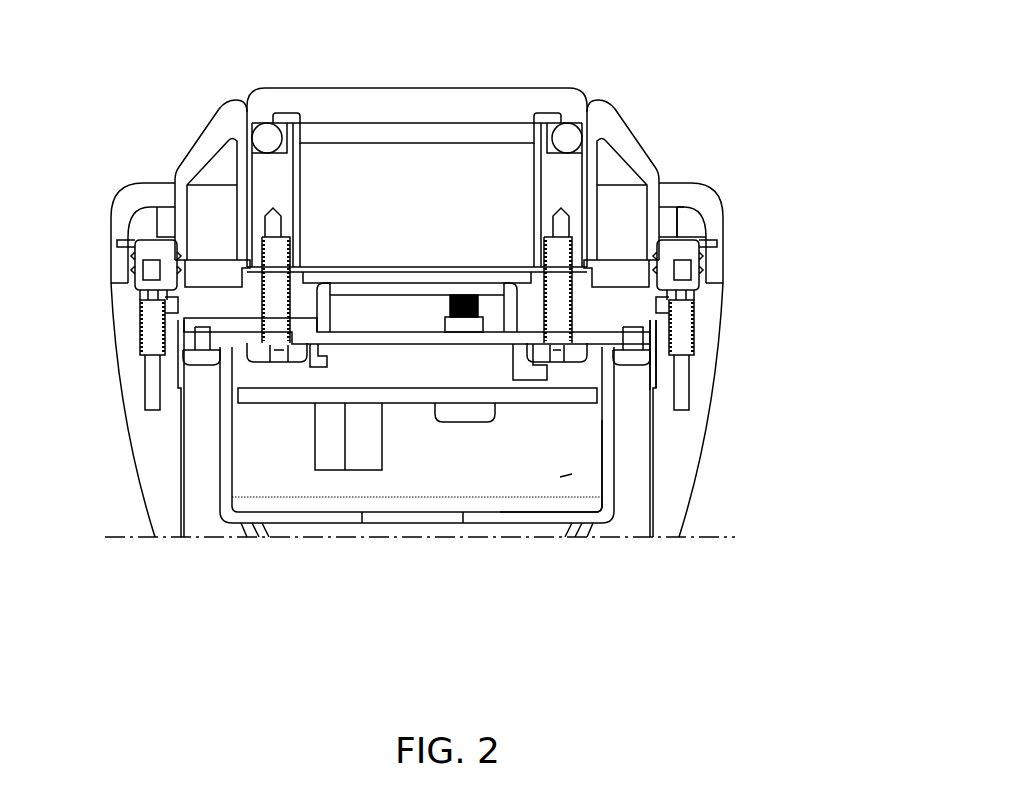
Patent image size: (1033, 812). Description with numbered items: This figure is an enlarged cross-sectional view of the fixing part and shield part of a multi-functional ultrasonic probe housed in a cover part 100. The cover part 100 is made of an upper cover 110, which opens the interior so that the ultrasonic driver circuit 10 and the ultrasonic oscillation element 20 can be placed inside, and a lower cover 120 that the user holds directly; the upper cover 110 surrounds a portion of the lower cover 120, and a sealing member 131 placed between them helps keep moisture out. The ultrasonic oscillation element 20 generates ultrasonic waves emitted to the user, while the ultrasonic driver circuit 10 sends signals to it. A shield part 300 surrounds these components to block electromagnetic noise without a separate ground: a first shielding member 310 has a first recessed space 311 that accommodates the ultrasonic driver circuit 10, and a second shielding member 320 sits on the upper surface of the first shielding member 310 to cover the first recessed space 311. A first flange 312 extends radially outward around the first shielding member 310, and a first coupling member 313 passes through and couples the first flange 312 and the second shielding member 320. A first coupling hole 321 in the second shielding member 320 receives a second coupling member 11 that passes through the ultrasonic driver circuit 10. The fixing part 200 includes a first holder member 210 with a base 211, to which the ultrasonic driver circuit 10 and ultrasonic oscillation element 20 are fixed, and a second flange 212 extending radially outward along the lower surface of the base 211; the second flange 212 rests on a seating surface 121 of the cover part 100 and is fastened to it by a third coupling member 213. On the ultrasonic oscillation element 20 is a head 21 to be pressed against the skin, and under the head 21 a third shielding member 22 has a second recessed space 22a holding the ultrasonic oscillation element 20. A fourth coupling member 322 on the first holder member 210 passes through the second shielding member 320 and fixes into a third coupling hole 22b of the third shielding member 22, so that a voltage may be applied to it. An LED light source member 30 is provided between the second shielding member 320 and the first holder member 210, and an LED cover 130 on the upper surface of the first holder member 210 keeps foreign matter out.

The ultrasonic driver circuit 10 is at (285, 398).
The second coupling member 11 is at (517, 518).
The ultrasonic oscillation element 20 is at (398, 130).
The head 21 is at (355, 95).
The third shielding member 22 is at (545, 112).
The second recessed space 22a is at (444, 189).
The third coupling hole 22b is at (277, 223).
The LED light source member 30 is at (227, 313).
The cover part 100 is at (463, 417).
The upper cover 110 is at (713, 218).
The lower cover 120 is at (679, 505).
The seating surface 121 is at (707, 302).
The LED cover 130 is at (495, 218).
The sealing member 131 is at (133, 248).
The fixing part 200 is at (730, 488).
The first holder member 210 is at (751, 362).
The base 211 is at (632, 307).
The second flange 212 is at (700, 315).
The third coupling member 213 is at (652, 323).
The shield part 300 is at (399, 495).
The first shielding member 310 is at (335, 518).
The first recessed space 311 is at (565, 480).
The first flange 312 is at (636, 332).
The first coupling member 313 is at (633, 365).
The second shielding member 320 is at (371, 340).
The first coupling hole 321 is at (480, 413).
The fourth coupling member 322 is at (250, 365).